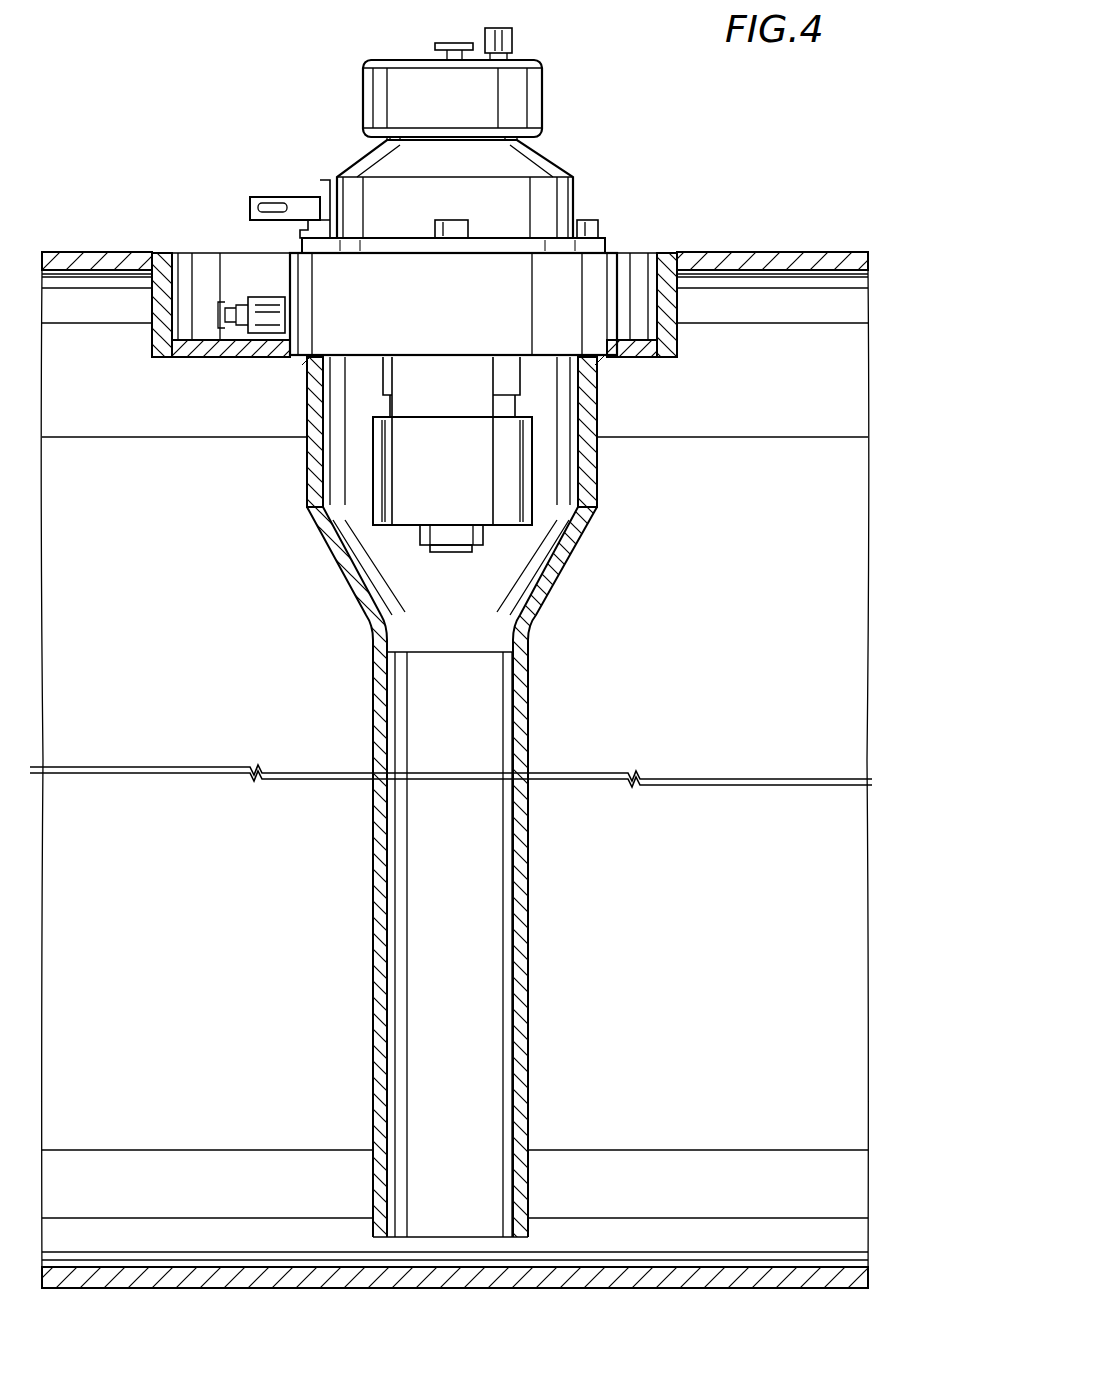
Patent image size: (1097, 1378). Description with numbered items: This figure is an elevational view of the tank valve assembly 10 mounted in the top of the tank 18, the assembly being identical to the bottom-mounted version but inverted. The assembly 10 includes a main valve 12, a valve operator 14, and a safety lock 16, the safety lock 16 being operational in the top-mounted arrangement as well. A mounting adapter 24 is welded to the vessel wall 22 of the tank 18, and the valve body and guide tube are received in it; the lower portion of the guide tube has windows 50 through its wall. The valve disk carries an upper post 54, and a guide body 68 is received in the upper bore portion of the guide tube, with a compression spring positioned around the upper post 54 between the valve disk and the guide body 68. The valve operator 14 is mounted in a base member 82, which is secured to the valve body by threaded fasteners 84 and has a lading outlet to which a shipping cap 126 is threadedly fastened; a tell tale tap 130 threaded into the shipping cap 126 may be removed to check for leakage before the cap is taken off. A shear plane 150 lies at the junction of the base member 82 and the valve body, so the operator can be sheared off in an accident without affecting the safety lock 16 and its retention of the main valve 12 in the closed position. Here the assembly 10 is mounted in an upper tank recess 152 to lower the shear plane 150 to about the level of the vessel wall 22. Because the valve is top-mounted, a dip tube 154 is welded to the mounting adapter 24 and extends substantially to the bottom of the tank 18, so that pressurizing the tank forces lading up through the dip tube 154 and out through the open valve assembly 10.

The tank valve assembly 10 is at (300, 143).
The main valve 12 is at (457, 481).
The valve operator 14 is at (270, 196).
The safety lock 16 is at (255, 335).
The tank 18 is at (788, 252).
The vessel wall 22 is at (100, 264).
The mounting adapter 24 is at (597, 333).
The windows 50 is at (385, 402).
The upper post 54 is at (450, 555).
The guide body 68 is at (485, 532).
The base member 82 is at (560, 160).
The threaded fasteners 84 is at (450, 217).
The shipping cap 126 is at (545, 97).
The tell tale tap 130 is at (512, 33).
The shear plane 150 is at (290, 243).
The upper tank recess 152 is at (640, 278).
The dip tube 154 is at (530, 716).